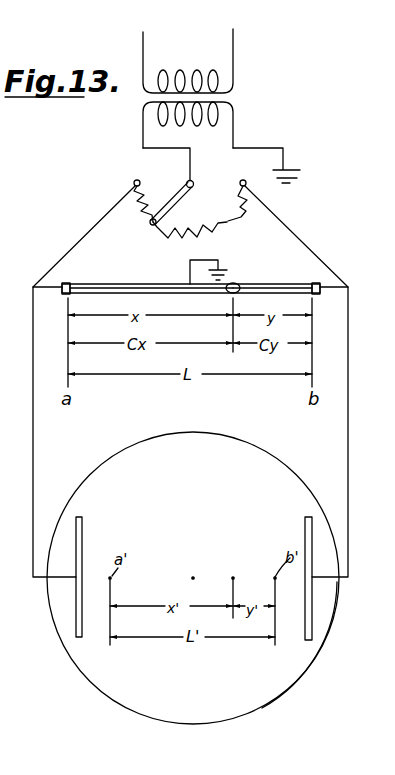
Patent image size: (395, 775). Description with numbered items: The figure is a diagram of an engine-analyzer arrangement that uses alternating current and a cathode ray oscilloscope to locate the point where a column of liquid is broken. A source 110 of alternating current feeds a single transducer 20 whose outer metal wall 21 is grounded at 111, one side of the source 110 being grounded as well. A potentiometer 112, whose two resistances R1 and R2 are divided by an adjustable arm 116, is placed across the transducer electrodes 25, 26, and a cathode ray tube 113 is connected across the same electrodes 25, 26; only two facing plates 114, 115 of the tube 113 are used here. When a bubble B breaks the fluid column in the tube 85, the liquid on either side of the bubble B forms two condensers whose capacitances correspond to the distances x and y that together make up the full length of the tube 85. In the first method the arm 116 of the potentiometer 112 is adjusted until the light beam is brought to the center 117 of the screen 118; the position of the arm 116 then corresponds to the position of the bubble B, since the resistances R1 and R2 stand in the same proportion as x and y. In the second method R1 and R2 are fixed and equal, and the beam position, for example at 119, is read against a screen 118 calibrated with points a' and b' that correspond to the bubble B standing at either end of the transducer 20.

The source of alternating current 110 is at (230, 97).
The potentiometer 112 is at (143, 203).
The arm of the potentiometer 116 is at (172, 208).
The resistance R1 is at (148, 210).
The resistance R2 is at (230, 223).
The ground 111 is at (222, 271).
The bubble B is at (237, 284).
The tube 85 is at (125, 267).
The transducer 20 is at (141, 282).
The outer metal wall 21 is at (264, 287).
The transducer electrode 25 is at (60, 292).
The transducer electrode 26 is at (321, 288).
The plate 114 is at (82, 535).
The plate 115 is at (305, 528).
The center of the cathode ray tube screen 117 is at (193, 577).
The beam position 119 is at (233, 577).
The cathode ray tube 113 is at (262, 708).
The cathode ray tube screen 118 is at (173, 712).